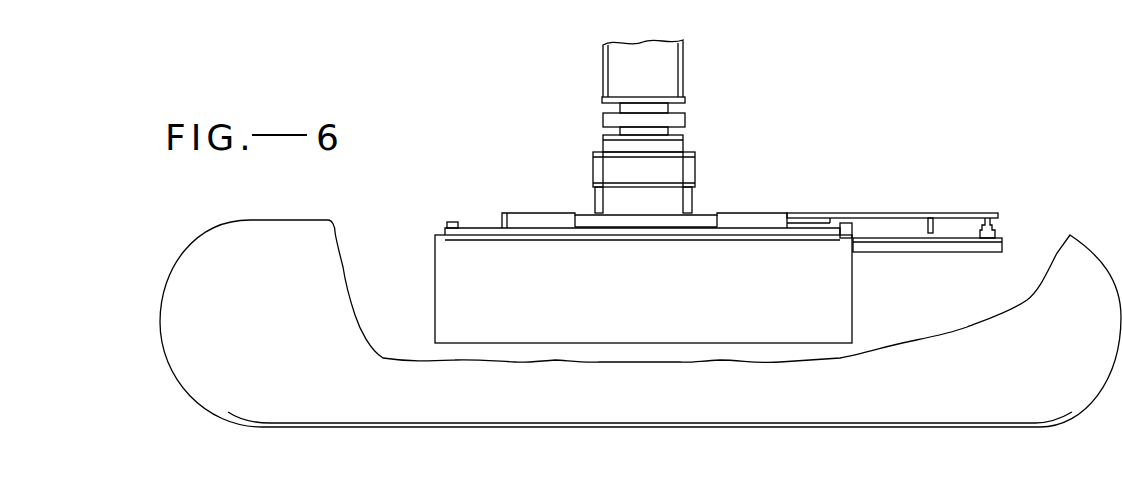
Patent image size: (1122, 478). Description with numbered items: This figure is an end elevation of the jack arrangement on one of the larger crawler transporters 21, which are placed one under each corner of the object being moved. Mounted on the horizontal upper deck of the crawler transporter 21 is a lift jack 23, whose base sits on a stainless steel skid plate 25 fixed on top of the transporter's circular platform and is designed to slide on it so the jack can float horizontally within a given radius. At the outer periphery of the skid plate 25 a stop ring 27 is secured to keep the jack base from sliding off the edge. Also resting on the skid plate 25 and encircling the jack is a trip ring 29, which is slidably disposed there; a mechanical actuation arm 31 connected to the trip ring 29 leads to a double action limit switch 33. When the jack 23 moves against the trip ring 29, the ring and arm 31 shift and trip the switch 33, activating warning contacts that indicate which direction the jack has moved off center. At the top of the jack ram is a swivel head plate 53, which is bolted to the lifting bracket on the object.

The crawler transporter 21 is at (1017, 465).
The lift jack 23 is at (680, 140).
The skid plate 25 is at (483, 228).
The stop ring 27 is at (447, 222).
The trip ring 29 is at (504, 213).
The mechanical actuation arm 31 is at (860, 213).
The double action limit switch 33 is at (993, 230).
The swivel head plate 53 is at (607, 118).